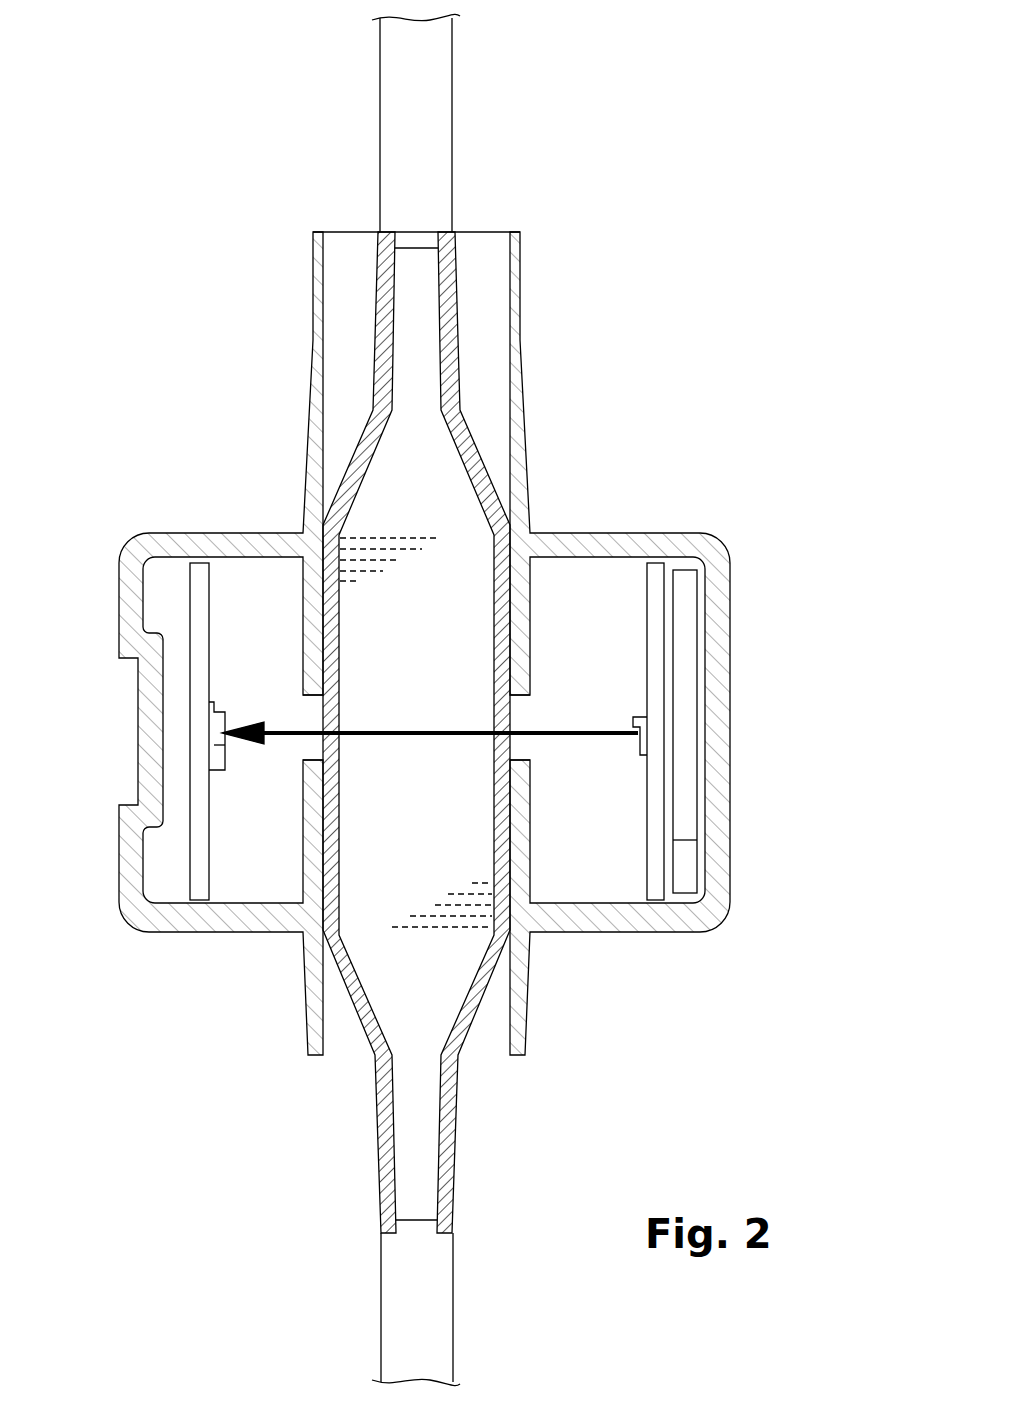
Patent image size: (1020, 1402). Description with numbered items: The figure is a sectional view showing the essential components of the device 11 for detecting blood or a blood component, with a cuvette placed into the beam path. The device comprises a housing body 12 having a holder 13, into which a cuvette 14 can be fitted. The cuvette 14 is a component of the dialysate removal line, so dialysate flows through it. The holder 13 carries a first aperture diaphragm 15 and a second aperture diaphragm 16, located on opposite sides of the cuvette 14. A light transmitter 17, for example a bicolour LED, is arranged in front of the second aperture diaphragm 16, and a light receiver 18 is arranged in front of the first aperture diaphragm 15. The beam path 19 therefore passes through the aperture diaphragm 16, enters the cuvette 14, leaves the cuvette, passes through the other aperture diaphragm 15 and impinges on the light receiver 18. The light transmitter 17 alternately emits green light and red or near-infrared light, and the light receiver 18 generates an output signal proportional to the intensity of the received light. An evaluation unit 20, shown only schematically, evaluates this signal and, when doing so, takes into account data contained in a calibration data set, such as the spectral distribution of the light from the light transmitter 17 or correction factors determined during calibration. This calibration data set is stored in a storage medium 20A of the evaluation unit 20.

The device for detecting blood or a blood component 11 is at (640, 466).
The housing body 12 is at (175, 548).
The holder 13 is at (468, 600).
The cuvette 14 is at (457, 437).
The first aperture diaphragm 15 is at (303, 712).
The second aperture diaphragm 16 is at (520, 712).
The light transmitter 17 is at (647, 724).
The light receiver 18 is at (213, 725).
The beam path 19 is at (392, 737).
The evaluation unit 20 is at (752, 731).
The storage medium 20A is at (685, 869).